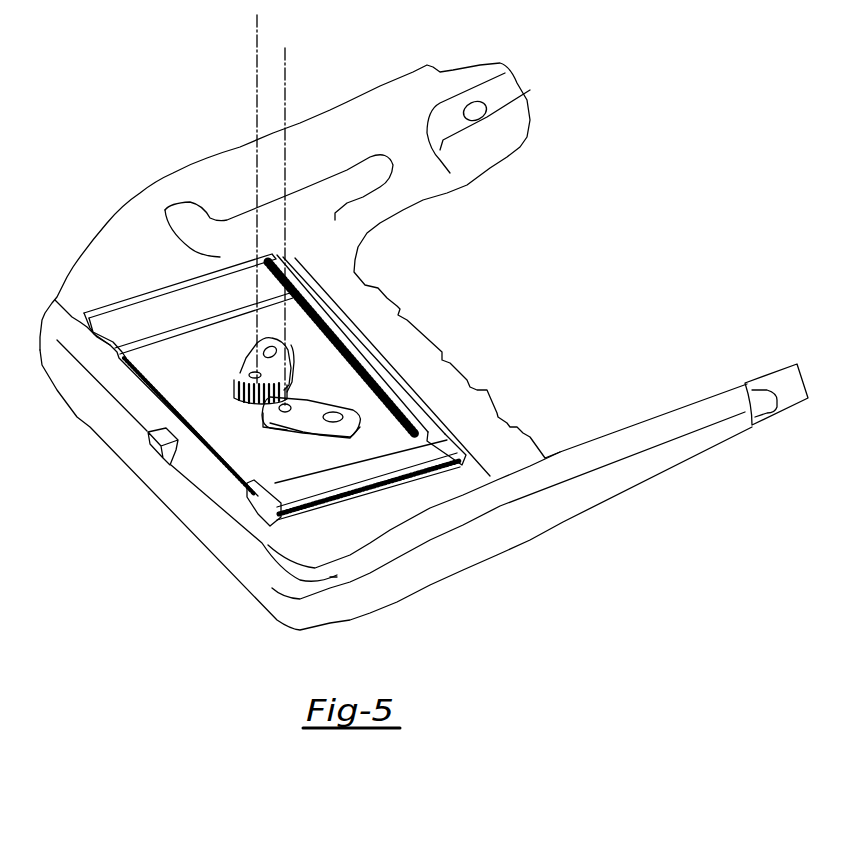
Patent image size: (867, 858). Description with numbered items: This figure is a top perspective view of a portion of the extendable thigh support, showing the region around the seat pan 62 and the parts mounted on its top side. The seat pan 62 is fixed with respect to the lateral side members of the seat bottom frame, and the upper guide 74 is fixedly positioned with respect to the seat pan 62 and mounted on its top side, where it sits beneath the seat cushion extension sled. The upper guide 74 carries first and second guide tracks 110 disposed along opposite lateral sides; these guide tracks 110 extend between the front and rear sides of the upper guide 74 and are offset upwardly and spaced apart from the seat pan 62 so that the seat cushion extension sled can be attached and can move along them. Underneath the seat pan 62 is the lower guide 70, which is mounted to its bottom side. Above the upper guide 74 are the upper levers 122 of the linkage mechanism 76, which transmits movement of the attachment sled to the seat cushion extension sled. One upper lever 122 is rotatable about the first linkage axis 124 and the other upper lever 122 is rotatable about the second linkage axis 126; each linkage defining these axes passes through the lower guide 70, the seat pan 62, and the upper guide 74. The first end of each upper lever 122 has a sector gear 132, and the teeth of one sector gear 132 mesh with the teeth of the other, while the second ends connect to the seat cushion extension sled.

The seat pan 62 is at (205, 168).
The lower guide 70 is at (149, 438).
The upper guide 74 is at (148, 401).
The linkage mechanism 76 is at (303, 380).
The guide track 110 is at (55, 300).
The upper lever 122 is at (250, 363).
The first linkage axis 124 is at (253, 35).
The second linkage axis 126 is at (287, 65).
The sector gear 132 is at (263, 410).